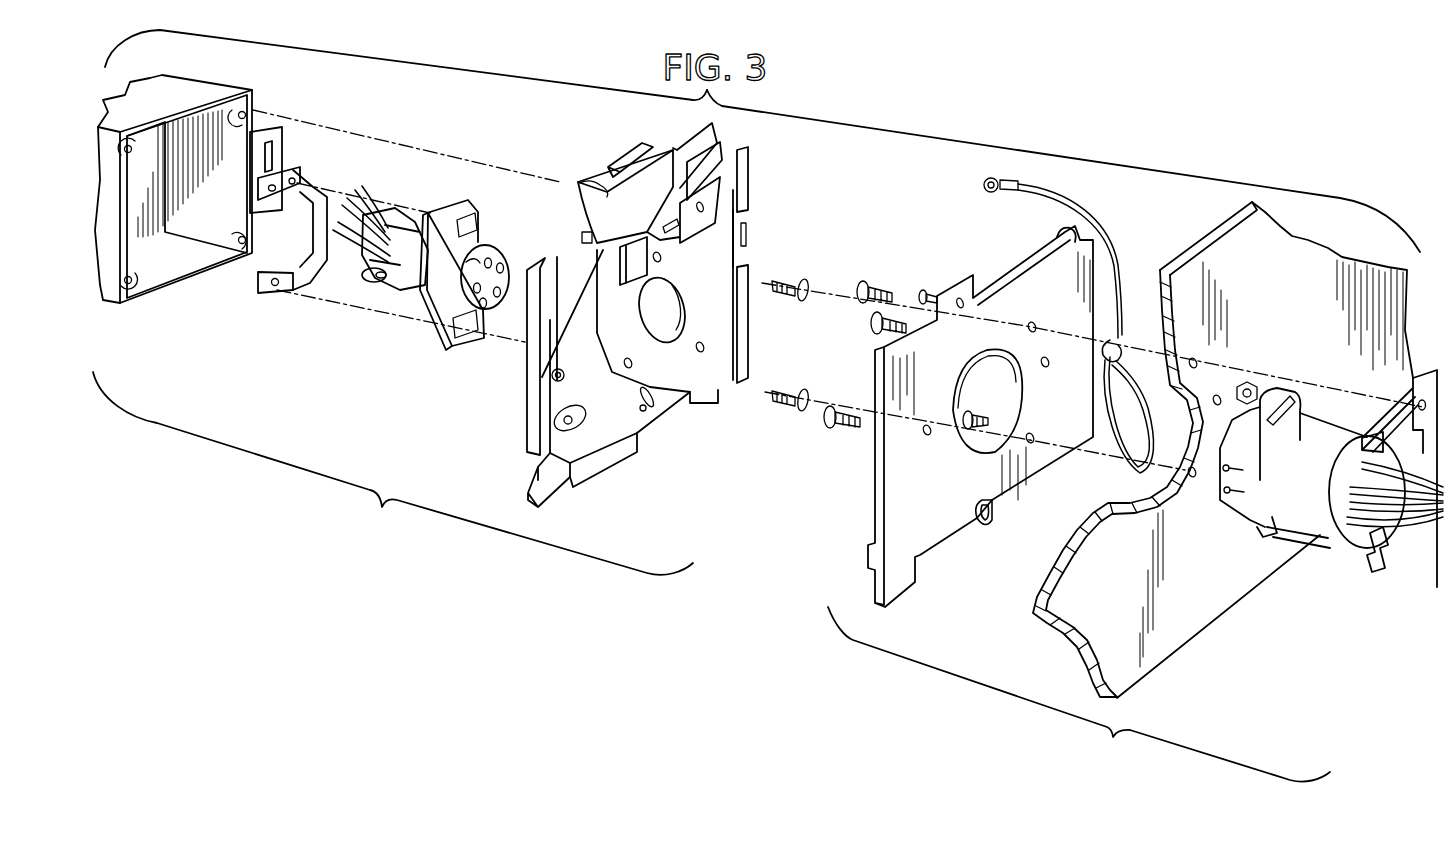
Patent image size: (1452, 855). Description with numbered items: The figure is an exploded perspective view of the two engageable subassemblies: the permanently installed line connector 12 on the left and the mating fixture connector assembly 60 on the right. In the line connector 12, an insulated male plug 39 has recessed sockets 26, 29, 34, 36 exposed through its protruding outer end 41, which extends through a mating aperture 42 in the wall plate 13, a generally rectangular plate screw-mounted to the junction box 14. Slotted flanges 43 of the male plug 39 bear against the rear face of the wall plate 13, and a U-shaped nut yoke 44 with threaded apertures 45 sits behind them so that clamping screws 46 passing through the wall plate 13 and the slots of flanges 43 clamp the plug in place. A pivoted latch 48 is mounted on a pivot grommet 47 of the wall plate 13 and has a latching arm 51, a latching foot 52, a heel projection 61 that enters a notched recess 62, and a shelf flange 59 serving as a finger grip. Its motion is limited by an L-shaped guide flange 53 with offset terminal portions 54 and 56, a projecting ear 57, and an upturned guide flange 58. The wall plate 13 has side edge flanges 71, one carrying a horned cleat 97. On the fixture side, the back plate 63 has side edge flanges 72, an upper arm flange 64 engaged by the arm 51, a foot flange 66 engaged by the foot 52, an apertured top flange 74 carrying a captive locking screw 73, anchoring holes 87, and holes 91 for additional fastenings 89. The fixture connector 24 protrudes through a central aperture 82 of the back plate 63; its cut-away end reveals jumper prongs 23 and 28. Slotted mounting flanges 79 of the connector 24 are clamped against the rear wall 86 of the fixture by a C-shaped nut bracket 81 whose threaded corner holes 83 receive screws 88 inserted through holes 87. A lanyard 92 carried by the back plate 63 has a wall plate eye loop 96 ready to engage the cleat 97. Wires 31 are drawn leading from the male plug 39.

The line connector 12 is at (400, 302).
The wall plate 13 is at (630, 457).
The junction box 14 is at (182, 286).
The jumper prong 23 is at (1224, 470).
The fixture connector 24 is at (1325, 437).
The recessed socket 26 is at (447, 300).
The jumper prong 28 is at (1230, 492).
The recessed socket 29 is at (483, 305).
The wires 31 is at (377, 283).
The recessed socket 34 is at (500, 265).
The recessed socket 36 is at (508, 268).
The male plug 39 is at (465, 193).
The protruding outer end 41 is at (480, 250).
The mating aperture 42 is at (680, 313).
The slotted flanges 43 is at (455, 208).
The nut yoke 44 is at (316, 258).
The threaded apertures 45 is at (297, 178).
The clamping screws 46 is at (791, 292).
The pivot grommet 47 is at (559, 381).
The pivoted latch 48 is at (590, 350).
The latching arm 51 is at (683, 135).
The latching foot 52 is at (658, 406).
The L-shaped guide flange 53 is at (690, 227).
The offset terminal portion 54 is at (727, 147).
The offset terminal portion 56 is at (630, 275).
The projecting ear 57 is at (582, 232).
The upturned guide flange 58 is at (580, 476).
The shelf flange 59 is at (622, 153).
The fixture connector assembly 60 is at (1063, 436).
The heel projection 61 is at (548, 457).
The notched recess 62 is at (535, 485).
The back plate 63 is at (860, 527).
The upper arm flange 64 is at (1055, 232).
The foot flange 66 is at (982, 524).
The side edge flanges 71 is at (528, 403).
The side edge flanges 72 is at (872, 584).
The locking screw 73 is at (930, 292).
The apertured top flange 74 is at (958, 282).
The slotted mounting flanges 79 is at (1282, 390).
The nut bracket 81 is at (1368, 560).
The central aperture 82 is at (1020, 388).
The threaded corner holes 83 is at (1435, 380).
The rear wall 86 is at (1092, 608).
The anchoring holes 87 is at (1032, 322).
The screws 88 is at (857, 290).
The additional fastenings 89 is at (862, 328).
The holes 91 is at (1047, 362).
The lanyard 92 is at (1115, 240).
The wall plate eye loop 96 is at (980, 185).
The horned cleat 97 is at (750, 238).